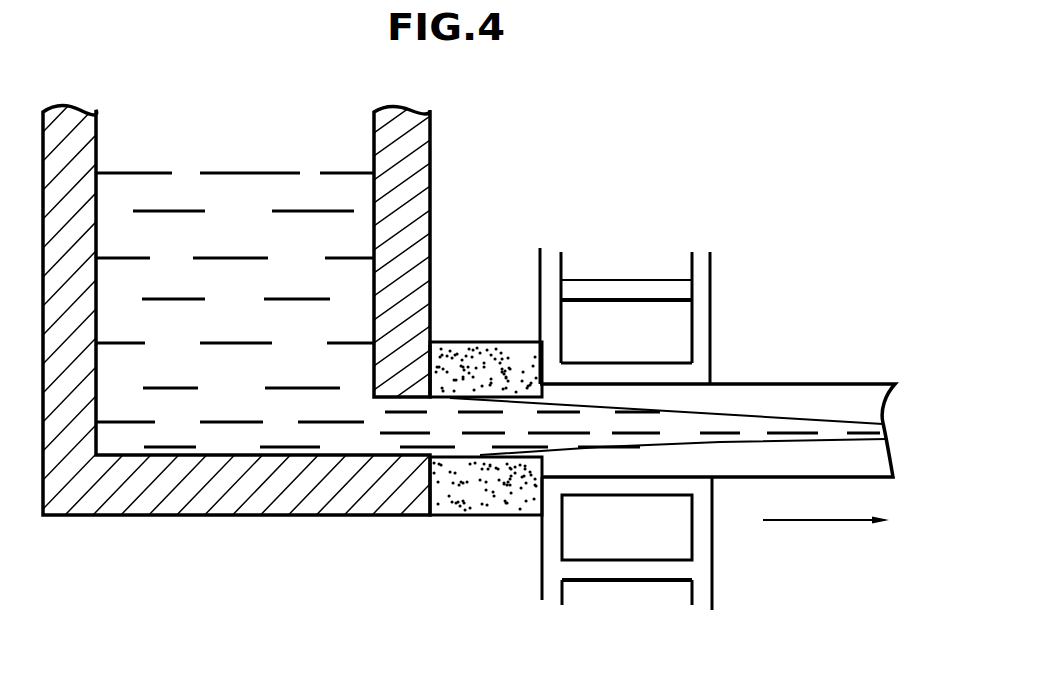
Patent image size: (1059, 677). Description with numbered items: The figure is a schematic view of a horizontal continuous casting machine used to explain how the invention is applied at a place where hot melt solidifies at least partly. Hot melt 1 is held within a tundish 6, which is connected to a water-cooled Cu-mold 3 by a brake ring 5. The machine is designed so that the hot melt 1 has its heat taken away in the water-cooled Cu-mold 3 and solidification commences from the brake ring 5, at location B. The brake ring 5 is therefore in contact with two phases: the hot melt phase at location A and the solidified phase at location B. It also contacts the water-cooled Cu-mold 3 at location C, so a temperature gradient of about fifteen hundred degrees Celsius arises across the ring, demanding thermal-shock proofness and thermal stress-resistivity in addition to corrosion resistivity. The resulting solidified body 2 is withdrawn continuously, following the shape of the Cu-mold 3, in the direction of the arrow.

The hot melt 1 is at (213, 197).
The solidified body 2 is at (712, 402).
The water-cooled Cu-mold 3 is at (603, 372).
The brake ring 5 is at (468, 483).
The tundish 6 is at (428, 153).
The location A is at (448, 395).
The location B is at (520, 395).
The location C is at (545, 358).